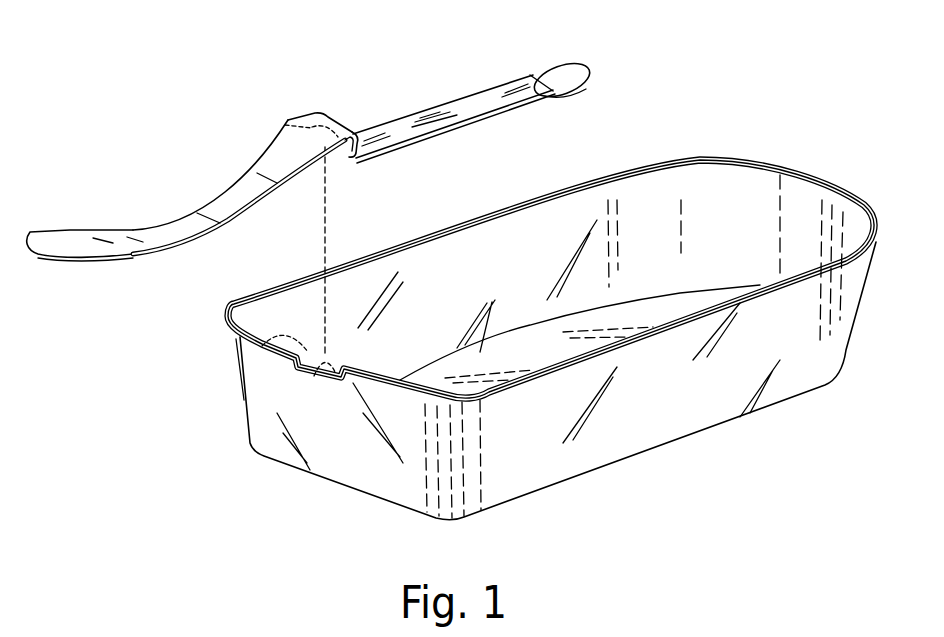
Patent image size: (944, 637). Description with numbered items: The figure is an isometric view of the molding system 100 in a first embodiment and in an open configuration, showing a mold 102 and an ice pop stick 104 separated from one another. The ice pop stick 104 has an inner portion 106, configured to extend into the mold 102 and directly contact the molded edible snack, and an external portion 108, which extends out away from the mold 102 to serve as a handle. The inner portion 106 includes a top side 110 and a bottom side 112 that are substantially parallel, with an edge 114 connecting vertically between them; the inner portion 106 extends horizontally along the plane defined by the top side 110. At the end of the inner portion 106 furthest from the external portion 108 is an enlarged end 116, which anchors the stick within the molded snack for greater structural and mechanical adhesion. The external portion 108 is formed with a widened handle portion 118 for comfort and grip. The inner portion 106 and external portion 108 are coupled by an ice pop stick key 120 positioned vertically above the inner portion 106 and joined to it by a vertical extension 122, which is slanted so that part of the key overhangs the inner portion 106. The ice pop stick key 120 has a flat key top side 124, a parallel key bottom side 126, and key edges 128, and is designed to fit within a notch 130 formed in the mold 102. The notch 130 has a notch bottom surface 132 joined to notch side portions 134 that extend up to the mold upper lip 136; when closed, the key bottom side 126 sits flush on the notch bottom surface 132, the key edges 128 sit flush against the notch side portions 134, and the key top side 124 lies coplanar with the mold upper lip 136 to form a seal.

The molding system 100 is at (112, 54).
The mold 102 is at (883, 311).
The ice pop stick 104 is at (103, 290).
The inner portion 106 is at (447, 88).
The external portion 108 is at (106, 150).
The top side 110 is at (499, 93).
The bottom side 112 is at (516, 102).
The edge 114 is at (388, 136).
The enlarged end 116 is at (583, 78).
The widened handle portion 118 is at (53, 238).
The ice pop stick key 120 is at (265, 117).
The vertical extension 122 is at (340, 148).
The key top side 124 is at (305, 117).
The key bottom side 126 is at (343, 157).
The key edges 128 is at (320, 126).
The notch 130 is at (278, 372).
The notch bottom surface 132 is at (326, 362).
The notch side portions 134 is at (241, 338).
The mold upper lip 136 is at (597, 353).